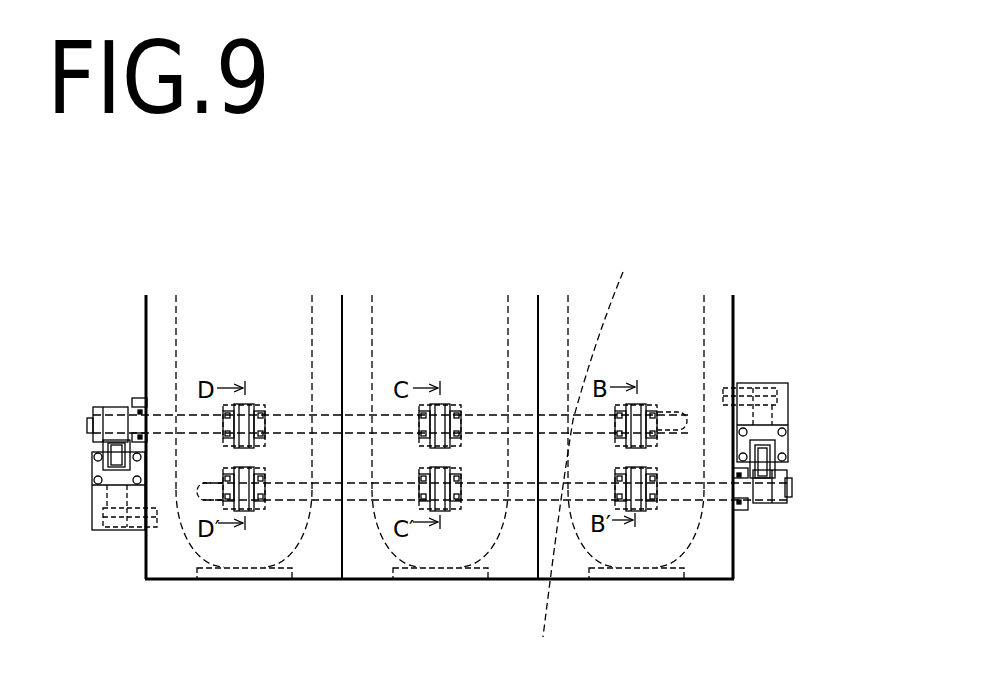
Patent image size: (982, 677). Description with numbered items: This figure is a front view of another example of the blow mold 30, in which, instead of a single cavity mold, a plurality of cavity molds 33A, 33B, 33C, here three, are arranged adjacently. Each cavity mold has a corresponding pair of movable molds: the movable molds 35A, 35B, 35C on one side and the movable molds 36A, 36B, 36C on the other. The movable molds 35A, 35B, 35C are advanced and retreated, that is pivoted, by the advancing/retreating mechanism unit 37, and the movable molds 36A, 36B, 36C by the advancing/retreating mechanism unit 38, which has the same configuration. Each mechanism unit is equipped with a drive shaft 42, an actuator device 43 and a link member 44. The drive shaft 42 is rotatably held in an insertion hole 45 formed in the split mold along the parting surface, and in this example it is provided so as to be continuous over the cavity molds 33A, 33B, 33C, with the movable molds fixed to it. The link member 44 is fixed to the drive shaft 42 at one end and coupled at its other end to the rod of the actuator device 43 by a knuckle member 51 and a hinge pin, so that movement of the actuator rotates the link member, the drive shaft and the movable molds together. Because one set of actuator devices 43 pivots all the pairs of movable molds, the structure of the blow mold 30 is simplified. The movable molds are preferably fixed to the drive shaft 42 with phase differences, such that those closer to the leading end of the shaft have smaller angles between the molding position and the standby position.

The blow mold 30 is at (753, 245).
The cavity mold 33A is at (717, 568).
The cavity mold 33B is at (522, 565).
The cavity mold 33C is at (325, 570).
The movable mold 35A is at (637, 403).
The movable mold 35B is at (442, 403).
The movable mold 35C is at (245, 403).
The movable mold 36A is at (250, 515).
The movable mold 36B is at (445, 515).
The movable mold 36C is at (640, 507).
The advancing/retreating mechanism unit 37 is at (93, 390).
The advancing/retreating mechanism unit 38 is at (783, 372).
The drive shaft 42 is at (440, 457).
The insertion hole 45 is at (440, 457).
The actuator device 43 is at (100, 503).
The link member 44 is at (115, 413).
The knuckle member 51 is at (107, 462).